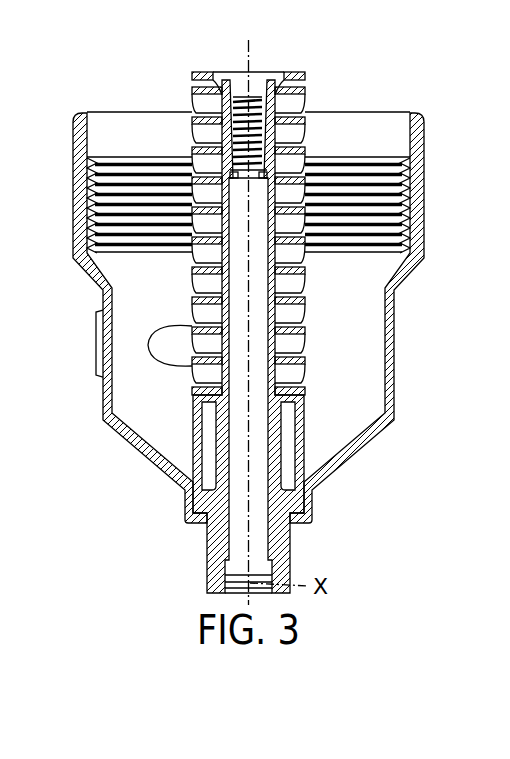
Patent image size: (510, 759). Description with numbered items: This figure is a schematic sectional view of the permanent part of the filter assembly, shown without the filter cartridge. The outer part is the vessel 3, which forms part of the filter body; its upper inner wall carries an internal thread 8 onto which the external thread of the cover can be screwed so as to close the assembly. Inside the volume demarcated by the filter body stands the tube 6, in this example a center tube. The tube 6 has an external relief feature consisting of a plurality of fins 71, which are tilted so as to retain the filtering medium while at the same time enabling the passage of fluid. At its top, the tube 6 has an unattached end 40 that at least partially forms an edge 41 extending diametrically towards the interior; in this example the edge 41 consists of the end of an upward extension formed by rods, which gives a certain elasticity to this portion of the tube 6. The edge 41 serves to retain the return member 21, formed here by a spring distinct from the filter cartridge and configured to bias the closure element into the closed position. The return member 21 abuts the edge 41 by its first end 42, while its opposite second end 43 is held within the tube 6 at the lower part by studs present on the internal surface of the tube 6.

The vessel 3 is at (84, 260).
The tube 6 is at (192, 331).
The internal thread 8 is at (95, 197).
The return member 21 is at (266, 150).
The unattached end 40 is at (205, 110).
The edge 41 is at (233, 100).
The first end 42 is at (248, 105).
The second end 43 is at (256, 178).
The fins 71 is at (190, 268).